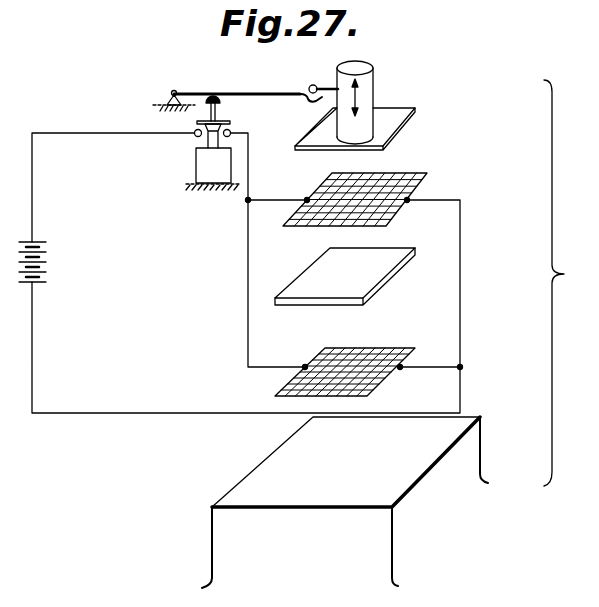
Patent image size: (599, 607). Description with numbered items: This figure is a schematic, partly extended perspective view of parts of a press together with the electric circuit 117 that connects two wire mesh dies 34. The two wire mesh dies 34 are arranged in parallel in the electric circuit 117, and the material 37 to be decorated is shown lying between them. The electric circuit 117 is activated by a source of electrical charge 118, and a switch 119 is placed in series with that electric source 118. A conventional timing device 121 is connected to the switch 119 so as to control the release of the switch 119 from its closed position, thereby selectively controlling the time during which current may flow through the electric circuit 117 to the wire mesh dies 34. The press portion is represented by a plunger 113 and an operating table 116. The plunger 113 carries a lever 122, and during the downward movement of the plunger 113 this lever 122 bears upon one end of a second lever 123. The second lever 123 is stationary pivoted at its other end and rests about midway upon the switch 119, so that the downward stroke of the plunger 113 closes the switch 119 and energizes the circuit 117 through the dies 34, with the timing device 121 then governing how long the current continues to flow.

The wire mesh die 34 is at (412, 178).
The material to be decorated 37 is at (383, 268).
The plunger 113 is at (399, 115).
The operating table 116 is at (437, 443).
The electric circuit 117 is at (58, 398).
The source of electrical charge 118 is at (47, 262).
The switch 119 is at (219, 92).
The timing device 121 is at (196, 163).
The lever 122 is at (324, 86).
The second lever 123 is at (261, 93).